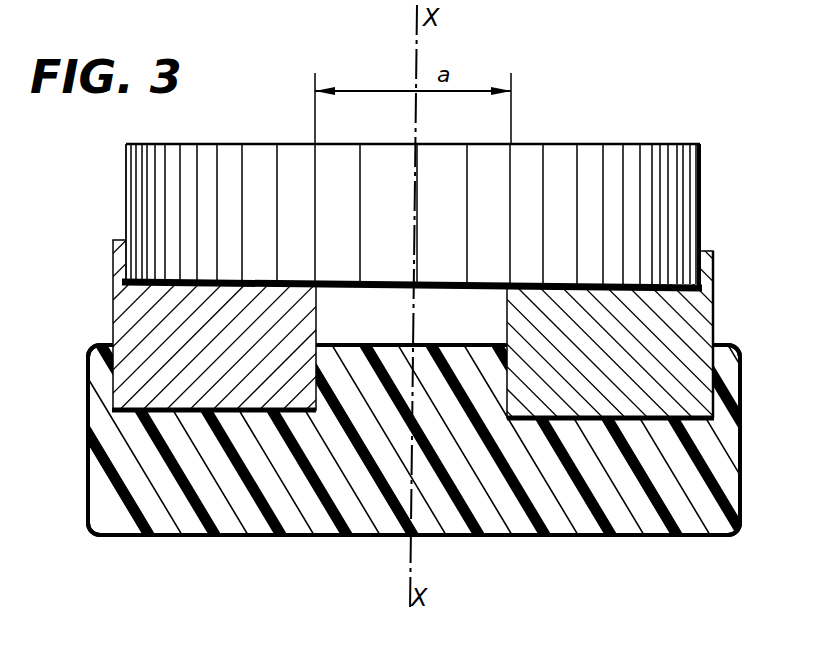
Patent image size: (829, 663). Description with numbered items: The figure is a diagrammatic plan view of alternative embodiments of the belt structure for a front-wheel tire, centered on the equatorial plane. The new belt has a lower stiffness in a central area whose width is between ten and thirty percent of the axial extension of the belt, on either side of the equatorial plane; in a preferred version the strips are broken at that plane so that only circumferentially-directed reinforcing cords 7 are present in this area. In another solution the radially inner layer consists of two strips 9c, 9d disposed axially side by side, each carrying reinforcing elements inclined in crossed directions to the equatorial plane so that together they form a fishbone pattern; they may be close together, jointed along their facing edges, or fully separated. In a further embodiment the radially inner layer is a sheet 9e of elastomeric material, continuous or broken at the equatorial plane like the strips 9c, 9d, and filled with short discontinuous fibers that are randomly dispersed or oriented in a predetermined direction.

The circumferentially-directed reinforcing cords 7 is at (181, 214).
The strip 9c is at (132, 313).
The strip 9d is at (685, 321).
The sheet of elastomeric material 9e is at (100, 462).